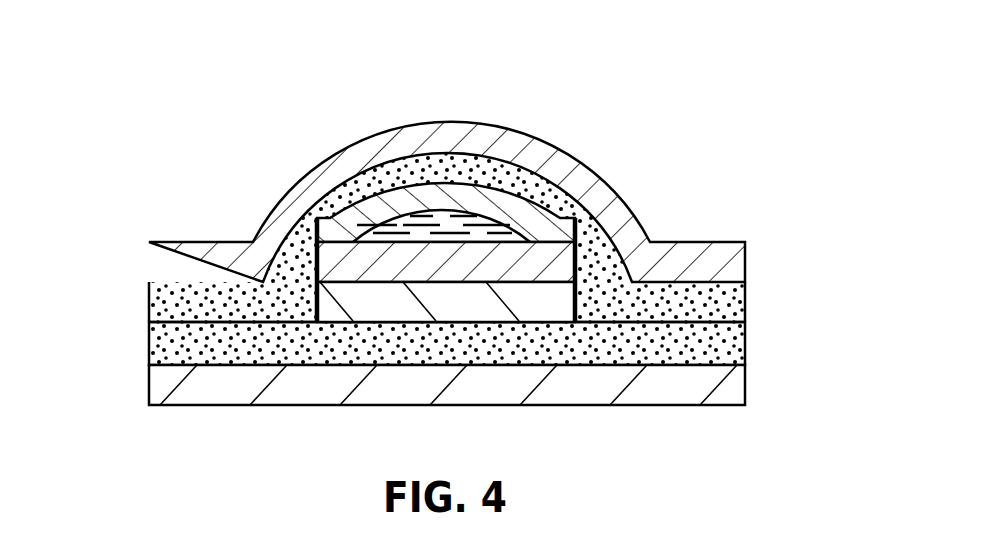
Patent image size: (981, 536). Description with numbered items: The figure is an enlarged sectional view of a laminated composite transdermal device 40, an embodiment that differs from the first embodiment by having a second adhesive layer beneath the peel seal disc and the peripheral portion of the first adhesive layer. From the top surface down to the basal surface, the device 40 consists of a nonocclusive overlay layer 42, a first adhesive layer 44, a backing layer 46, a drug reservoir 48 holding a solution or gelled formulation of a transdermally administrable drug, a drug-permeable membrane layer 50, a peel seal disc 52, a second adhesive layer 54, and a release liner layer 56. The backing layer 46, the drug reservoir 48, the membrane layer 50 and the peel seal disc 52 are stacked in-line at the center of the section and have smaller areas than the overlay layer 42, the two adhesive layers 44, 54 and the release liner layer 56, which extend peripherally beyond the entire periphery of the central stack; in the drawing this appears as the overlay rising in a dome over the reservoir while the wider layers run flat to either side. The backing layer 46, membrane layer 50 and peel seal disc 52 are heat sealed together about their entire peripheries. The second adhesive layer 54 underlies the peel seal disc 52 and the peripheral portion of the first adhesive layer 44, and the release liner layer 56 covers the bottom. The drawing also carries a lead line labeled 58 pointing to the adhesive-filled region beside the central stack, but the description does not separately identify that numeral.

The laminated composite device 40 is at (308, 105).
The nonocclusive overlay layer 42 is at (720, 263).
The first adhesive layer 44 is at (733, 298).
The backing layer 46 is at (537, 228).
The drug reservoir 48 is at (458, 213).
The drug-permeable membrane layer 50 is at (550, 273).
The peel seal disc 52 is at (550, 302).
The second adhesive layer 54 is at (733, 343).
The release liner layer 56 is at (723, 385).
The adhesive fill 58 is at (317, 230).